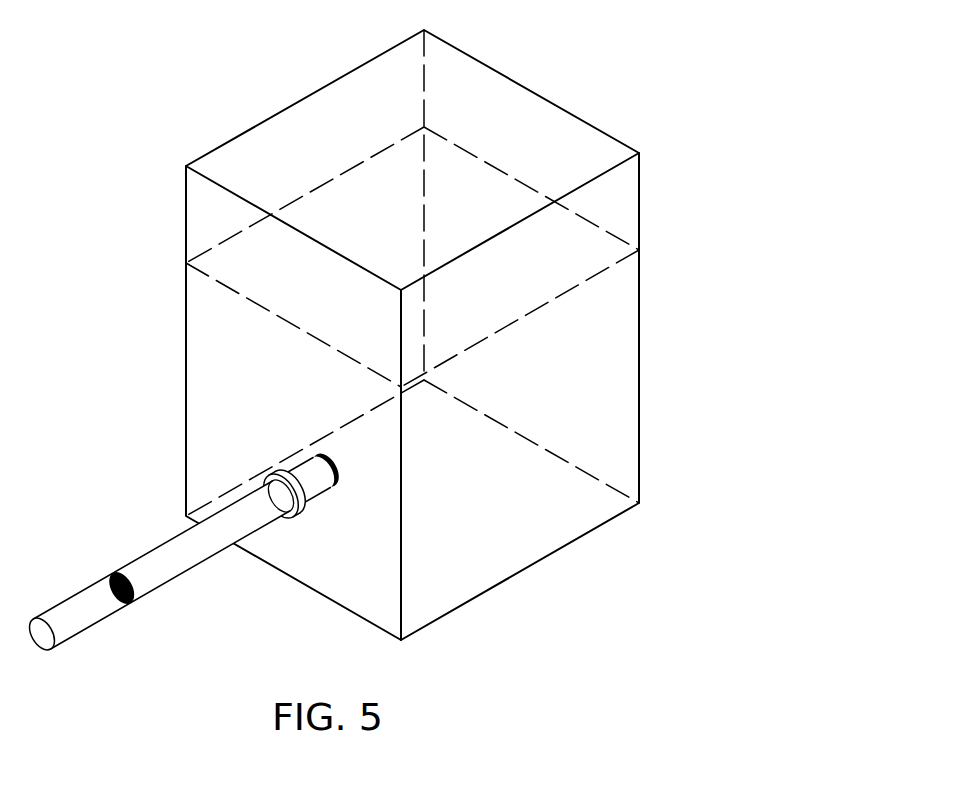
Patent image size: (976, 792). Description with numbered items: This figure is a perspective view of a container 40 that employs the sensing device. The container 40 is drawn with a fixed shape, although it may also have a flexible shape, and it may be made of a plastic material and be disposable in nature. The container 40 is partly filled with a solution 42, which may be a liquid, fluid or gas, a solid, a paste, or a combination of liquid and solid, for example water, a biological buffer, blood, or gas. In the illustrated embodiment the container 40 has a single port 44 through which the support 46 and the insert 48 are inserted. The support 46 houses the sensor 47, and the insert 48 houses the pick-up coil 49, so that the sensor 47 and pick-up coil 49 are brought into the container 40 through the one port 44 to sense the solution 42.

The container 40 is at (454, 335).
The solution 42 is at (612, 339).
The port 44 is at (299, 503).
The support 46 is at (176, 566).
The sensor 47 is at (333, 482).
The insert 48 is at (52, 607).
The pick-up coil 49 is at (121, 598).